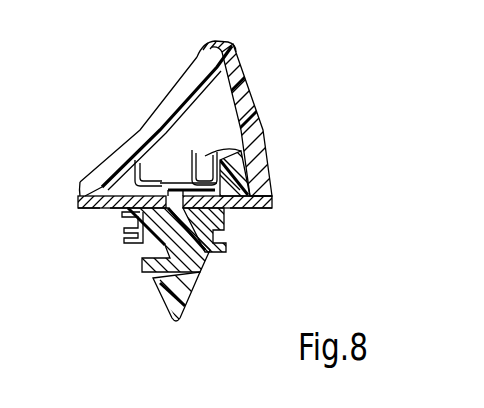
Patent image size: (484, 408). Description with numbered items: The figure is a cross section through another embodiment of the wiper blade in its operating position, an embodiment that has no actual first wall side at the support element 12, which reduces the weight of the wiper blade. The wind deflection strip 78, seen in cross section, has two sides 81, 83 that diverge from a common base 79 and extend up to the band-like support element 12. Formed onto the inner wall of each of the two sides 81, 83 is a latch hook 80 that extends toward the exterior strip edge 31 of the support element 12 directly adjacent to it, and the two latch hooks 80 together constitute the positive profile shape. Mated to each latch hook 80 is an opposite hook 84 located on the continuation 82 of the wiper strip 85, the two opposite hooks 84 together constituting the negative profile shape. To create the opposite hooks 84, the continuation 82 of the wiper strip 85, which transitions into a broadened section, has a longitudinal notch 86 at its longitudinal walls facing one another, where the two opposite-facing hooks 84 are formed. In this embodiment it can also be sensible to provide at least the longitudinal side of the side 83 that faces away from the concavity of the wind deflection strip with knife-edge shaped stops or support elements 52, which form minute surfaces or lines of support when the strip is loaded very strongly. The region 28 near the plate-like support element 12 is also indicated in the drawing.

The support element 12 is at (284, 200).
The plate opening edge 28 is at (122, 209).
The exterior strip edges 31 is at (90, 208).
The knife-edge shaped stops 52 is at (272, 194).
The wind deflection strip 78 is at (217, 115).
The common base 79 is at (227, 50).
The latch hook 80 is at (138, 263).
The side 81 is at (183, 105).
The continuation 82 is at (170, 192).
The side 83 is at (243, 92).
The opposite hook 84 is at (138, 168).
The wiper strip 85 is at (205, 283).
The longitudinal notch 86 is at (168, 185).